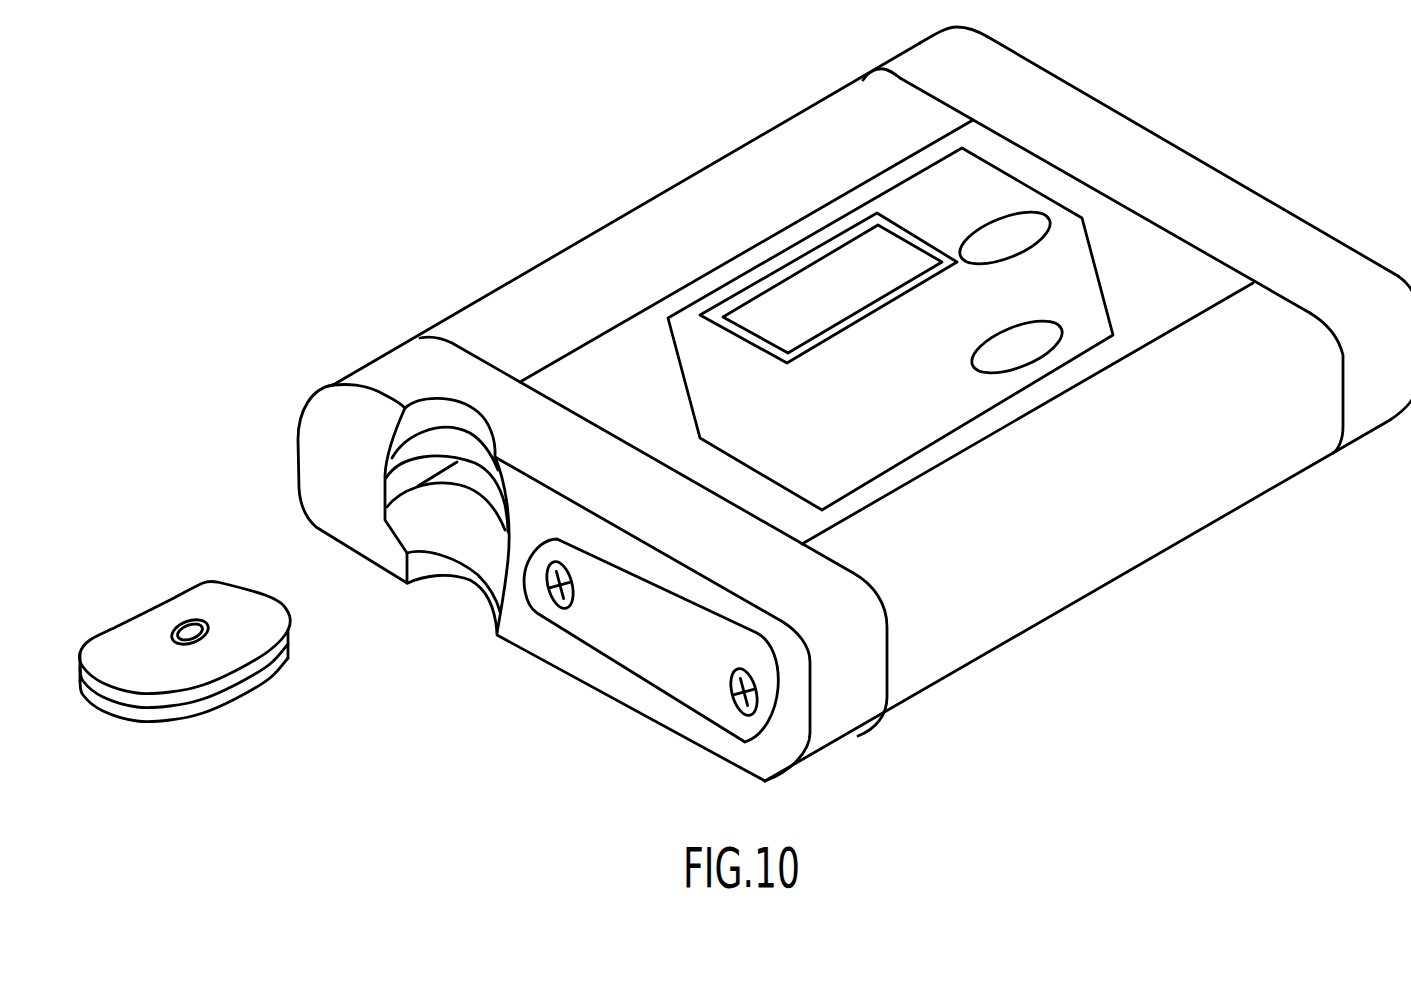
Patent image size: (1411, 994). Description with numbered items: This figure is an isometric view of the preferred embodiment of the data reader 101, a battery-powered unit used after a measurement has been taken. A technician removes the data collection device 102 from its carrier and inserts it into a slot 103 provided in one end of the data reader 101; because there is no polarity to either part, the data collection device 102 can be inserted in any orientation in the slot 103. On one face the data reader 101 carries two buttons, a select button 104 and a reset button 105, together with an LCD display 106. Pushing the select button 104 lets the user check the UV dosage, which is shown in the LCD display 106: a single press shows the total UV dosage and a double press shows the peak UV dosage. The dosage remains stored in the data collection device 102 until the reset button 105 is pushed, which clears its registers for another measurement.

The data reader 101 is at (707, 167).
The data collection device 102 is at (225, 692).
The slot 103 is at (467, 527).
The select button 104 is at (1023, 228).
The reset button 105 is at (1025, 352).
The LCD display 106 is at (803, 333).